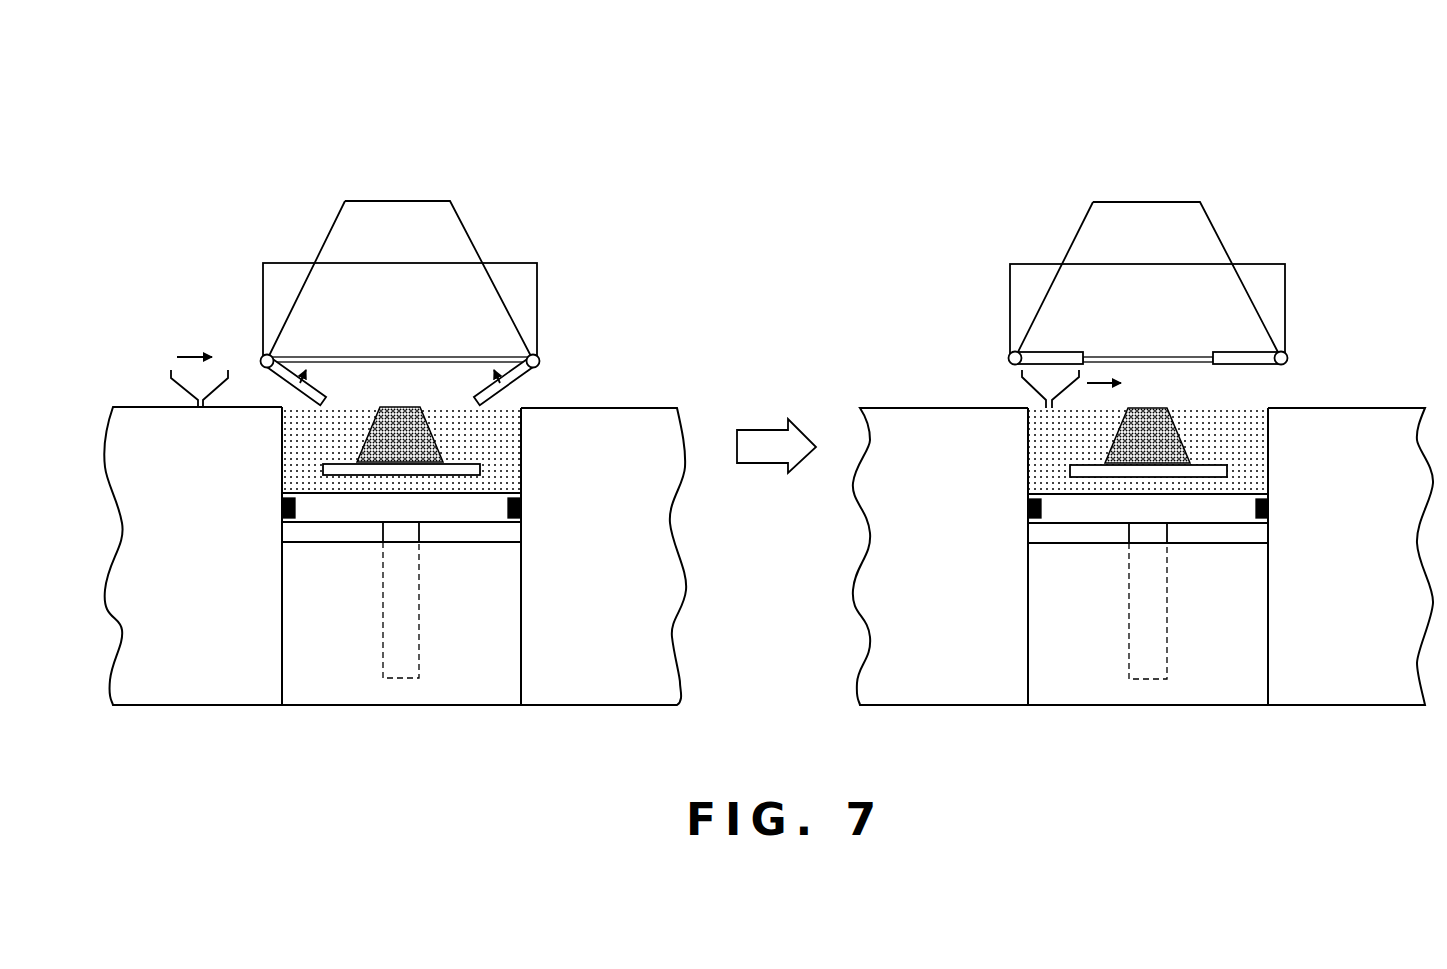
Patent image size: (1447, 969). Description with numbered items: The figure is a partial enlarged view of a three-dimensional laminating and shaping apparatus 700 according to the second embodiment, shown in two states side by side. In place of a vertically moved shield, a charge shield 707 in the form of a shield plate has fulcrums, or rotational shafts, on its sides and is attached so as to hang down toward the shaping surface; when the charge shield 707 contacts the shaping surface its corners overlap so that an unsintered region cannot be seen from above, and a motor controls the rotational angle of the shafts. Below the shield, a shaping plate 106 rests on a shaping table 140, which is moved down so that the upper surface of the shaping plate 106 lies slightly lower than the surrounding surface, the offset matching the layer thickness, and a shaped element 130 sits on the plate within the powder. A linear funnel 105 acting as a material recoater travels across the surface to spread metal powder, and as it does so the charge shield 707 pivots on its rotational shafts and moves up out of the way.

The three-dimensional laminating and shaping apparatus 700 is at (245, 146).
The linear funnel 105 is at (180, 390).
The charge shield 707 is at (325, 389).
The object 130 is at (427, 442).
The shaping plate 106 is at (342, 468).
The shaping table 140 is at (453, 510).